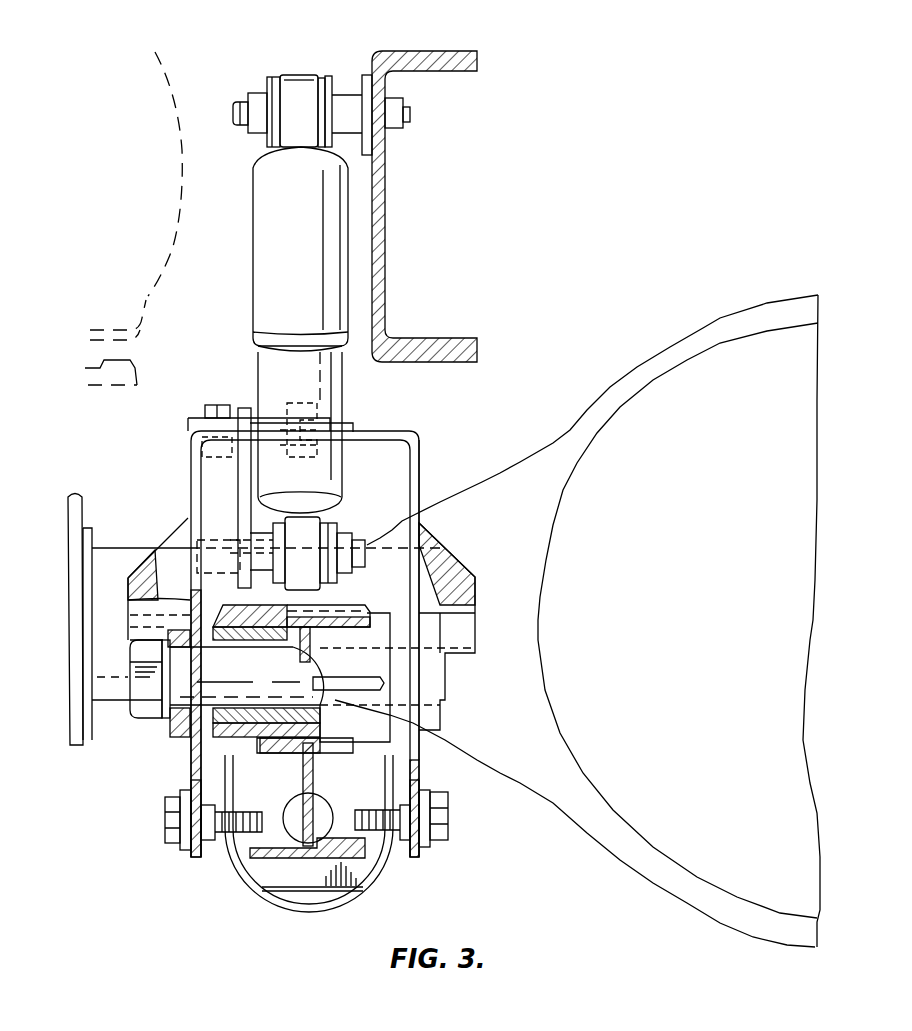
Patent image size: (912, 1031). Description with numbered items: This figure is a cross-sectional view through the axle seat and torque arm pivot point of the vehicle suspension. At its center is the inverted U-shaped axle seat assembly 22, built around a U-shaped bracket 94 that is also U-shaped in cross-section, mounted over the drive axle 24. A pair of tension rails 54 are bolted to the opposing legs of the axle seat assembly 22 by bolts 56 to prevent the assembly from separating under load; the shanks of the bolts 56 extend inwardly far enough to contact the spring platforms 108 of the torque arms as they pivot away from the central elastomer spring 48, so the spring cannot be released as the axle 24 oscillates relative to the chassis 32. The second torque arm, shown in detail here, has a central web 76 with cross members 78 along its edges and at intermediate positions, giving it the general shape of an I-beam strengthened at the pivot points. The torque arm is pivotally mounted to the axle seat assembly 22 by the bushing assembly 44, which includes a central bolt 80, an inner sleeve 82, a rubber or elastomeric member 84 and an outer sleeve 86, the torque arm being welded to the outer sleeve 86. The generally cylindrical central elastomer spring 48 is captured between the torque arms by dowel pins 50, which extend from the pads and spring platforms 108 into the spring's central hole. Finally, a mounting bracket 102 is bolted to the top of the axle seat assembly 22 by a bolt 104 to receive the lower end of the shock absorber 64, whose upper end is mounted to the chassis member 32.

The U-shaped axle seat assembly 22 is at (422, 432).
The drive axle 24 is at (119, 552).
The chassis 32 is at (387, 203).
The bushing assembly 44 is at (150, 725).
The central elastomer spring 48 is at (285, 912).
The dowel pins 50 is at (332, 827).
The tension rails 54 is at (192, 850).
The bolts 56 is at (165, 828).
The shock absorber 64 is at (257, 293).
The central web 76 is at (311, 784).
The cross members 78 is at (342, 738).
The central bolt 80 is at (142, 717).
The inner sleeve 82 is at (235, 648).
The rubber or elastomeric member 84 is at (192, 747).
The outer sleeve 86 is at (195, 763).
The U-shaped bracket 94 is at (420, 462).
The mounting bracket 102 is at (240, 458).
The bolt 104 is at (205, 413).
The spring platforms 108 is at (313, 893).